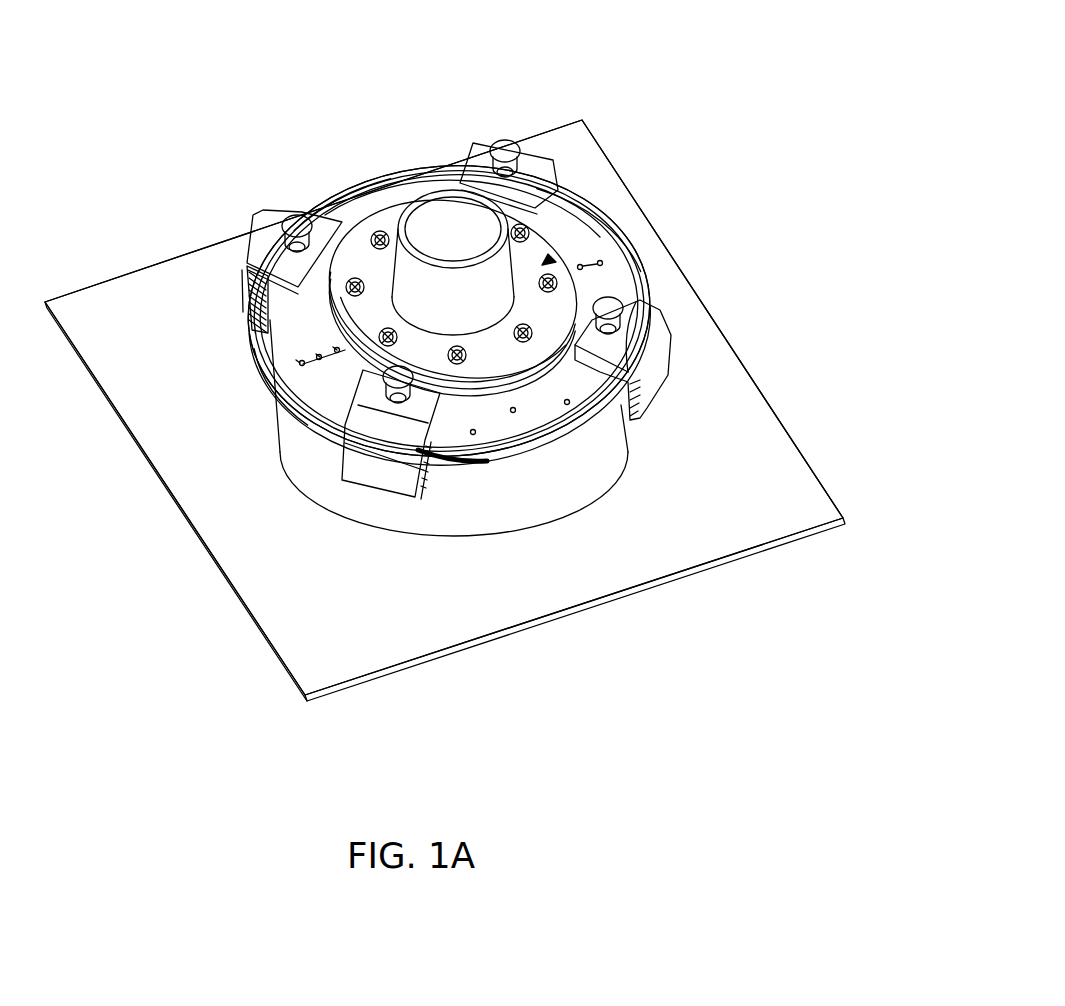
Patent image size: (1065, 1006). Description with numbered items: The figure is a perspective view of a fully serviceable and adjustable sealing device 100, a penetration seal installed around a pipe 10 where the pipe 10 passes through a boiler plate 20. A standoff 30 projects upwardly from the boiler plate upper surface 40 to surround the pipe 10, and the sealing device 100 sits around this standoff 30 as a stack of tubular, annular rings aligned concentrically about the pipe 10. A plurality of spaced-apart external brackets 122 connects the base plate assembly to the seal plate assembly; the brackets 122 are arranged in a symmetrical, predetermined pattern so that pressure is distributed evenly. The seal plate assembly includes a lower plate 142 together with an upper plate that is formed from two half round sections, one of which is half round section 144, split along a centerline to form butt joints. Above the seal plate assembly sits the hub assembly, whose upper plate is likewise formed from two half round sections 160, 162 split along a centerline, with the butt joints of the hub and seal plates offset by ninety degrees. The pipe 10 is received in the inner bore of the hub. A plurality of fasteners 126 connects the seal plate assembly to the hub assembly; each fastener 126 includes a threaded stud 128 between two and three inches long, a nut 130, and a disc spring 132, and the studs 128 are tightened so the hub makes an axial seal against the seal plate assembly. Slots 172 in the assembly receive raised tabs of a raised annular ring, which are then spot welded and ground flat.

The sealing device 100 is at (622, 66).
The pipe 10 is at (393, 203).
The boiler plate 20 is at (802, 533).
The standoff 30 is at (283, 423).
The boiler plate upper surface 40 is at (707, 367).
The external brackets 122 is at (215, 240).
The lower plate 142 is at (580, 200).
The half round section 162 is at (351, 448).
The slots 172 is at (608, 418).
The fasteners 126 is at (615, 248).
The threaded stud 128 is at (451, 402).
The nut 130 is at (352, 197).
The disc spring 132 is at (260, 327).
The half round section 144 is at (650, 280).
The half round section 160 is at (620, 230).